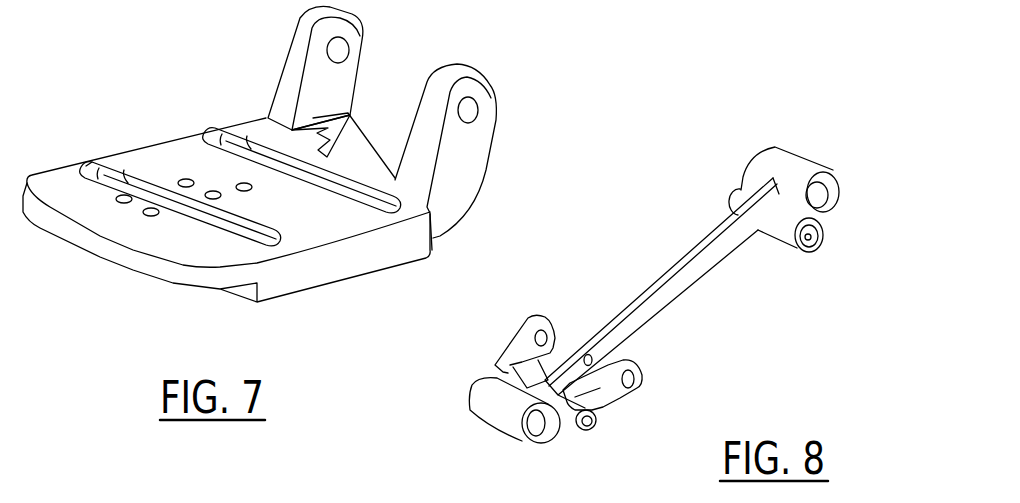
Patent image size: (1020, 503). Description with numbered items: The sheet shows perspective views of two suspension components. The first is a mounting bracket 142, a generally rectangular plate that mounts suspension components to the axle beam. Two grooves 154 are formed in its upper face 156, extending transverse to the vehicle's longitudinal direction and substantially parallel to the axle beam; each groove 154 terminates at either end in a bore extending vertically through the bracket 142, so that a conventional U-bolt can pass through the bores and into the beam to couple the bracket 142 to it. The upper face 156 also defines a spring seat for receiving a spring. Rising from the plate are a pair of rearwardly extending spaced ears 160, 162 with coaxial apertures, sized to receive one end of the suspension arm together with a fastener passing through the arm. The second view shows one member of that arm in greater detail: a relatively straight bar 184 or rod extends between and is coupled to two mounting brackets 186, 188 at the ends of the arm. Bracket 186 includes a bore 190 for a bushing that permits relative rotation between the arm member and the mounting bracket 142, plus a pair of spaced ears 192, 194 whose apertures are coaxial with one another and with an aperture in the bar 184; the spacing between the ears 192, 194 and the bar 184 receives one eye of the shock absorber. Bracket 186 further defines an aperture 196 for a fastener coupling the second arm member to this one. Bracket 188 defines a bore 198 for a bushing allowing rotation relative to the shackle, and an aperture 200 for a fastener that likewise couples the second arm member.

In FIG. 7, the mounting bracket 142 is at (143, 116).
In FIG. 7, the groove 154 is at (240, 243).
In FIG. 7, the upper face 156 is at (337, 224).
In FIG. 7, the ear 160 is at (471, 153).
In FIG. 7, the ear 162 is at (356, 38).
In FIG. 8, the bar 184 is at (673, 301).
In FIG. 8, the mounting bracket 186 is at (477, 406).
In FIG. 8, the mounting bracket 188 is at (795, 157).
In FIG. 8, the bore 190 is at (537, 436).
In FIG. 8, the ear 192 is at (636, 398).
In FIG. 8, the ear 194 is at (539, 318).
In FIG. 8, the aperture 196 is at (585, 428).
In FIG. 8, the bore 198 is at (800, 204).
In FIG. 8, the aperture 200 is at (806, 242).